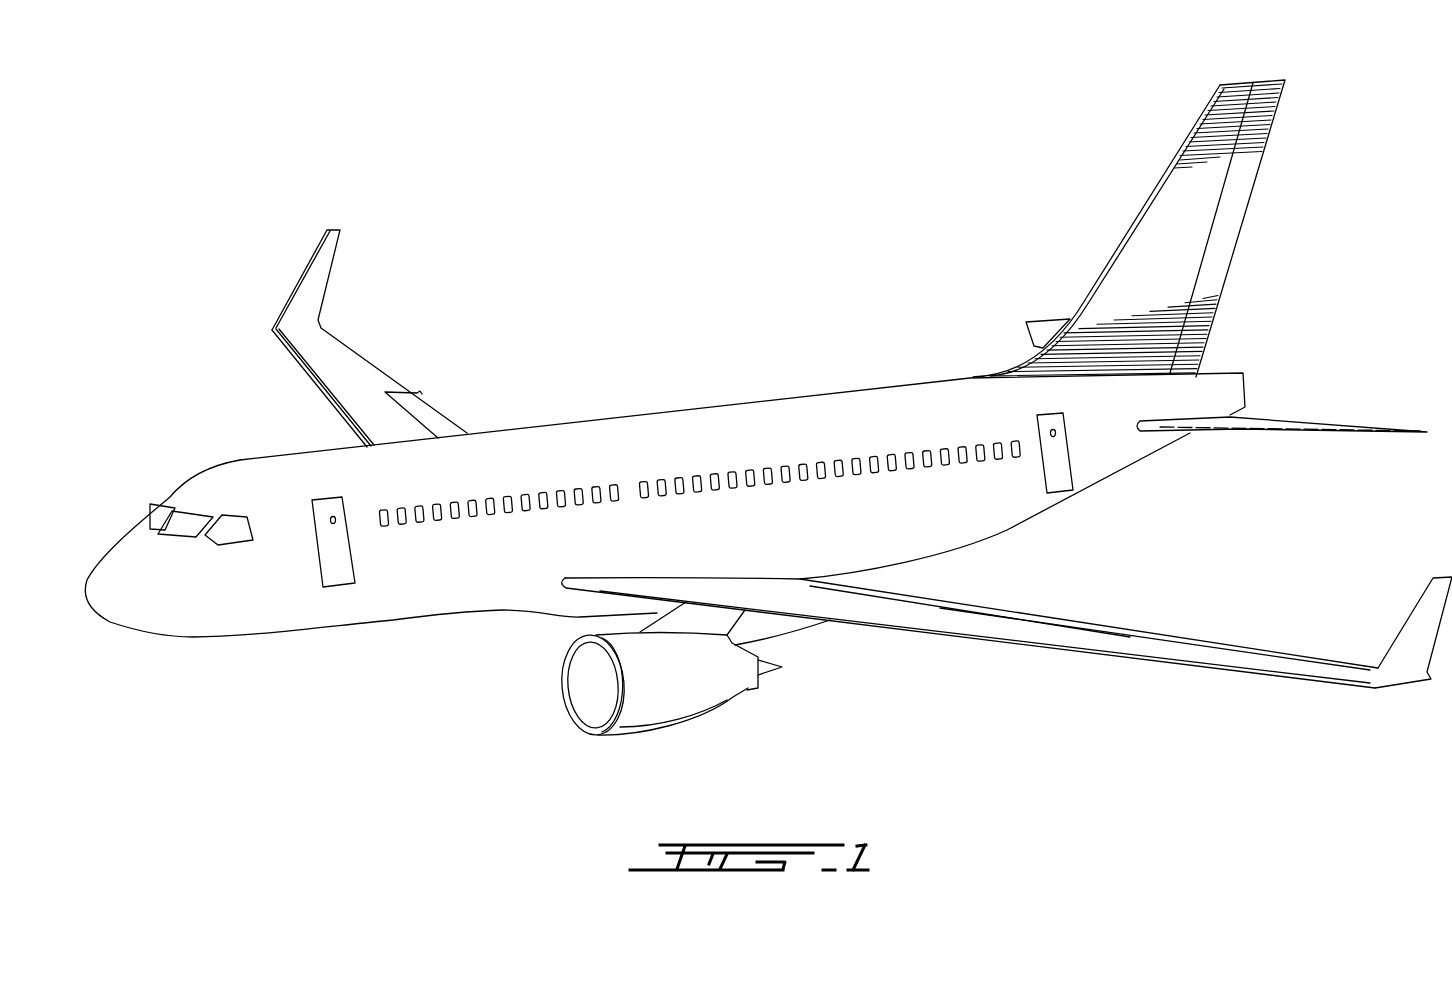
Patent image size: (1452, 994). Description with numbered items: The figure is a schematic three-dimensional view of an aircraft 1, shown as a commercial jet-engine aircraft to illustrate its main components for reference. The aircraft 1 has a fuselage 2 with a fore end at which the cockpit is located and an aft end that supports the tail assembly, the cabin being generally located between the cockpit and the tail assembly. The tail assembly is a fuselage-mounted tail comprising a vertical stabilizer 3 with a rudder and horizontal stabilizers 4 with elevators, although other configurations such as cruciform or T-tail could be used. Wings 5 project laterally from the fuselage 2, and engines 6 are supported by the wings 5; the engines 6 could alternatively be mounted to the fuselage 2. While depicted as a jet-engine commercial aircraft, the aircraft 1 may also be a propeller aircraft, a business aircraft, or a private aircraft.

The aircraft 1 is at (633, 322).
The fuselage 2 is at (410, 590).
The vertical stabilizer 3 is at (1165, 223).
The horizontal stabilizers 4 is at (1040, 328).
The wings 5 is at (353, 383).
The engines 6 is at (715, 700).